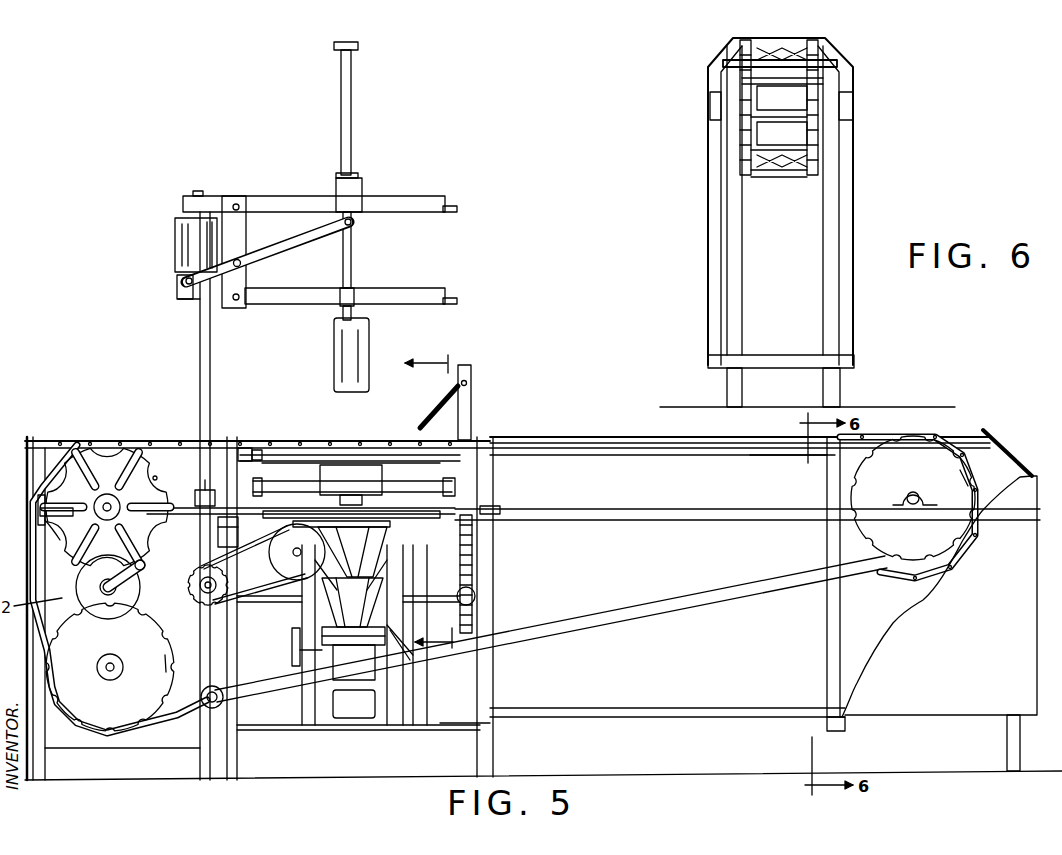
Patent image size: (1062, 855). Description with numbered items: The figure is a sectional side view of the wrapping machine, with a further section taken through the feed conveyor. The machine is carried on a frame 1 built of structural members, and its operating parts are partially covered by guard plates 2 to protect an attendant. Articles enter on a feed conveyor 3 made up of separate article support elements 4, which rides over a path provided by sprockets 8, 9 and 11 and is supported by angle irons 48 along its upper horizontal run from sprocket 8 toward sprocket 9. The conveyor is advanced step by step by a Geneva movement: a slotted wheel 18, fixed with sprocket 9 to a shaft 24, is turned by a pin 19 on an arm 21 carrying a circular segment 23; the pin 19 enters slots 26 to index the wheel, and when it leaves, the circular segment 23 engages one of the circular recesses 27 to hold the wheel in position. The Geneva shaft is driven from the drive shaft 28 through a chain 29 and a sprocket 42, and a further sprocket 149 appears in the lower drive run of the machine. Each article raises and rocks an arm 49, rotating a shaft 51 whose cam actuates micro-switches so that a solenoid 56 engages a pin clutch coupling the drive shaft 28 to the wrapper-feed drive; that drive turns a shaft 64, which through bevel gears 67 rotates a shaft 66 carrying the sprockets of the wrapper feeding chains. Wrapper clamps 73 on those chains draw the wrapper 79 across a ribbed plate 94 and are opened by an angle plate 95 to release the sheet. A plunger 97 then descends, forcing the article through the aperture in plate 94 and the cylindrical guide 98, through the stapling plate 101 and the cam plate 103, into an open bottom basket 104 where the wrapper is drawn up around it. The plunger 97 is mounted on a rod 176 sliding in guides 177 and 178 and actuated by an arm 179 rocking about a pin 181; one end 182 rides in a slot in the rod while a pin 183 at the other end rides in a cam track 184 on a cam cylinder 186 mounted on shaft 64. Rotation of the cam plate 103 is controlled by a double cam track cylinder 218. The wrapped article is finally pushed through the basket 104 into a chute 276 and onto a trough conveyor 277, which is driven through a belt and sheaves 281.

In FIG. 5, the frame 1 is at (718, 517).
In FIG. 6, the frame 1 is at (735, 256).
In FIG. 5, the guard plates 2 is at (989, 619).
In FIG. 6, the guard plates 2 is at (853, 246).
In FIG. 5, the feed conveyor 3 is at (985, 467).
In FIG. 6, the feed conveyor 3 is at (857, 131).
In FIG. 6, the article support elements 4 is at (790, 168).
In FIG. 5, the sprocket 8 is at (905, 486).
In FIG. 6, the sprocket 8 is at (745, 150).
In FIG. 5, the sprocket 9 is at (156, 477).
In FIG. 5, the sprocket 11 is at (125, 706).
In FIG. 5, the slotted wheel 18 is at (103, 472).
In FIG. 5, the pin 19 is at (147, 567).
In FIG. 5, the arm 21 is at (133, 580).
In FIG. 5, the circular segment 23 is at (117, 613).
In FIG. 5, the shaft 24 is at (112, 511).
In FIG. 5, the slots 26 is at (90, 548).
In FIG. 5, the circular recesses 27 is at (64, 490).
In FIG. 5, the drive shaft 28 is at (214, 596).
In FIG. 5, the chain 29 is at (183, 610).
In FIG. 5, the sprocket 42 is at (223, 608).
In FIG. 5, the angle irons 48 is at (536, 442).
In FIG. 5, the arm 49 is at (443, 401).
In FIG. 5, the shaft 51 is at (468, 382).
In FIG. 5, the solenoid 56 is at (229, 532).
In FIG. 5, the shaft 64 is at (198, 360).
In FIG. 5, the shaft 66 is at (398, 486).
In FIG. 5, the bevel gears 67 is at (202, 496).
In FIG. 5, the wrapper clamps 73 is at (258, 448).
In FIG. 5, the wrapper 79 is at (286, 450).
In FIG. 5, the plate 94 is at (312, 452).
In FIG. 5, the angle plate 95 is at (232, 446).
In FIG. 5, the plunger 97 is at (364, 349).
In FIG. 5, the cylindrical guide 98 is at (362, 482).
In FIG. 5, the stapling plate 101 is at (496, 507).
In FIG. 5, the cam plate 103 is at (430, 518).
In FIG. 5, the open bottom basket 104 is at (372, 540).
In FIG. 5, the idler sprocket 149 is at (223, 690).
In FIG. 5, the rod 176 is at (351, 110).
In FIG. 5, the guide 177 is at (357, 176).
In FIG. 5, the guide 178 is at (357, 291).
In FIG. 5, the arm 179 is at (290, 244).
In FIG. 5, the pin 181 is at (241, 265).
In FIG. 5, the end 182 is at (351, 223).
In FIG. 5, the pin 183 is at (190, 298).
In FIG. 5, the cam track 184 is at (176, 279).
In FIG. 5, the cam cylinder 186 is at (176, 234).
In FIG. 5, the double cam track cylinder 218 is at (311, 576).
In FIG. 5, the chute 276 is at (353, 648).
In FIG. 5, the trough conveyor 277 is at (392, 633).
In FIG. 5, the sheaves 281 is at (293, 647).